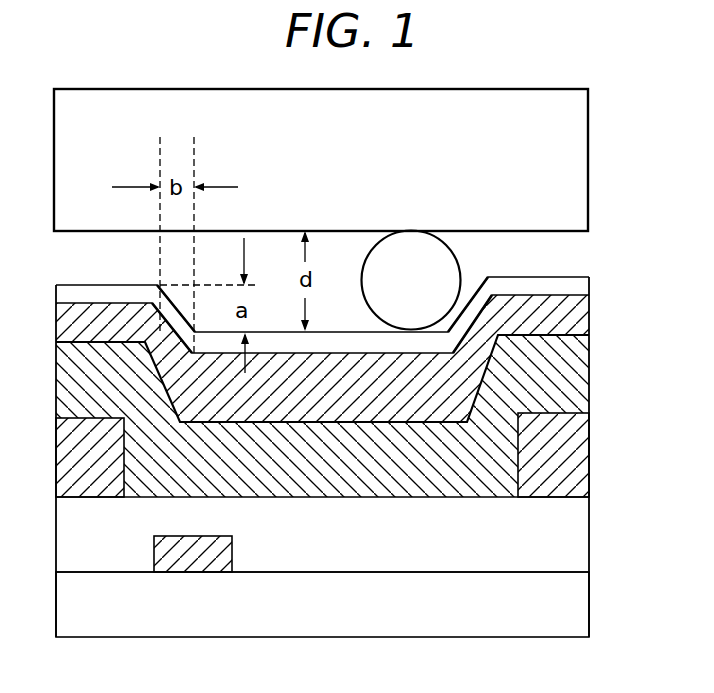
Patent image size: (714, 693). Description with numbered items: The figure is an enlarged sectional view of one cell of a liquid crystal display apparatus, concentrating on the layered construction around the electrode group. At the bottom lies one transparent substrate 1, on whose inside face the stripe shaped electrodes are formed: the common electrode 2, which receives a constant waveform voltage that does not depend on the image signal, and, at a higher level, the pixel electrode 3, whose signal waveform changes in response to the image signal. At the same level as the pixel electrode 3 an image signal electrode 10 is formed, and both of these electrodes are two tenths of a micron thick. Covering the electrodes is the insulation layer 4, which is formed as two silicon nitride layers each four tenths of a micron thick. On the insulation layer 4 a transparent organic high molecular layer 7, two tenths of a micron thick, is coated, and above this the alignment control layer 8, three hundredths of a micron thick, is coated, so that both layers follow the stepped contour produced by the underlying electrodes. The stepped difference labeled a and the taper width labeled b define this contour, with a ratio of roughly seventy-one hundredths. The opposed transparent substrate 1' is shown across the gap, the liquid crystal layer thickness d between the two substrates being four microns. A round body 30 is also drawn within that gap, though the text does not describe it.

The transparent substrate 1' is at (349, 160).
The spacer bead 30 is at (460, 268).
The alignment control layer 8 is at (578, 280).
The transparent organic high molecular layer 7 is at (580, 318).
The insulation layer 4 is at (577, 373).
The pixel electrode 3 is at (580, 455).
The image signal electrode 10 is at (72, 473).
The common electrode 2 is at (180, 573).
The transparent substrate 1 is at (351, 606).